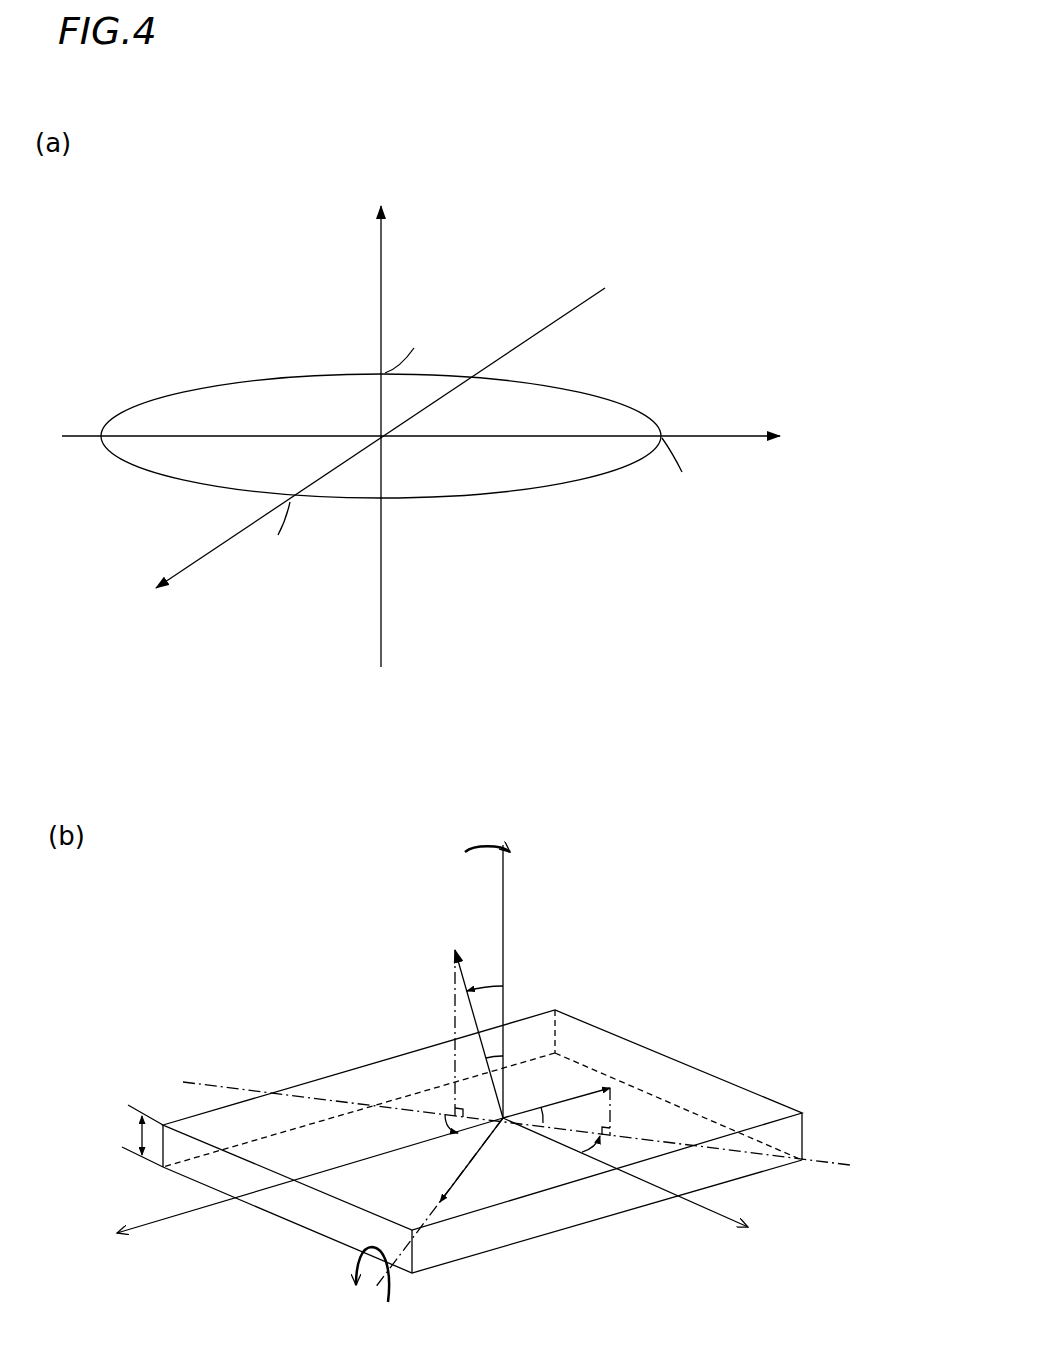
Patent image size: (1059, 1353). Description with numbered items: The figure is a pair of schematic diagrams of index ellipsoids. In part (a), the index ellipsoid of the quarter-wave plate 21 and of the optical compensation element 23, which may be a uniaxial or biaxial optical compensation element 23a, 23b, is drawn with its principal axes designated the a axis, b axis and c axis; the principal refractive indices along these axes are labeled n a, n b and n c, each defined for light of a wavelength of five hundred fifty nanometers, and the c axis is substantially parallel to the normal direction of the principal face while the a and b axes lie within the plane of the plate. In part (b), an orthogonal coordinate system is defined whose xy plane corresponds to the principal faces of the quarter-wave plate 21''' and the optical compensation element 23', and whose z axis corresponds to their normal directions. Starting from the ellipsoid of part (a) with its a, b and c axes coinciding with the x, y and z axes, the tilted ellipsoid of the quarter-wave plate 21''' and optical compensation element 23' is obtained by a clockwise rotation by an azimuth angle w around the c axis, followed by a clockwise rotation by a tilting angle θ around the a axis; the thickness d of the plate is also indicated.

The crystal plate 21 is at (483, 374).
The optical compensation element 23 is at (483, 374).
The uniaxial optical compensation element 23a is at (483, 374).
The biaxial optical compensation element 23b is at (614, 148).
The λ/4 plate 21''' is at (462, 1015).
The optical compensation element 23' is at (462, 1015).